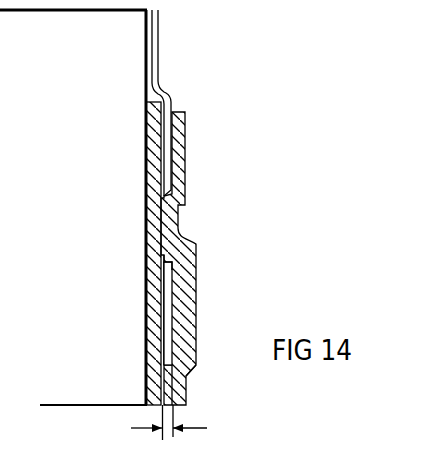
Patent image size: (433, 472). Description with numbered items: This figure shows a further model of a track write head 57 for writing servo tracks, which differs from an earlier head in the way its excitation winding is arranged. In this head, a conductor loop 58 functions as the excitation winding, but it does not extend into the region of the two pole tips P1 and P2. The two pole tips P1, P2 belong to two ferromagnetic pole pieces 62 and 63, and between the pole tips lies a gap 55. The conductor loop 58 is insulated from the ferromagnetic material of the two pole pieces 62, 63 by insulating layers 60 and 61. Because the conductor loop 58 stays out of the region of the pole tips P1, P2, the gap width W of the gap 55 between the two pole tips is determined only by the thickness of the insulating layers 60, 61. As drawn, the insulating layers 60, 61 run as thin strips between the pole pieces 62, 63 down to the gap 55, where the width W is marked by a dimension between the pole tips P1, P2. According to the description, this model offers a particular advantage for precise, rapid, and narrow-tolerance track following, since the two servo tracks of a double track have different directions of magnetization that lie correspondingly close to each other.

The gap 55 is at (176, 408).
The track write head 57 is at (183, 236).
The conductor loop 58 is at (195, 270).
The insulating layer 60 is at (150, 47).
The insulating layer 61 is at (157, 56).
The pole piece 62 is at (152, 327).
The pole piece 63 is at (197, 300).
The pole tip P1 is at (153, 407).
The pole tip P2 is at (183, 407).
The gap width W is at (167, 434).